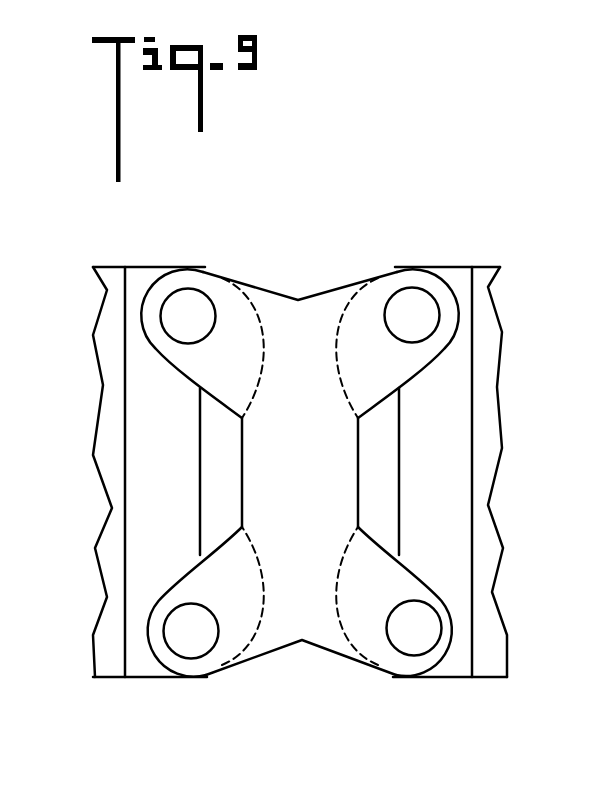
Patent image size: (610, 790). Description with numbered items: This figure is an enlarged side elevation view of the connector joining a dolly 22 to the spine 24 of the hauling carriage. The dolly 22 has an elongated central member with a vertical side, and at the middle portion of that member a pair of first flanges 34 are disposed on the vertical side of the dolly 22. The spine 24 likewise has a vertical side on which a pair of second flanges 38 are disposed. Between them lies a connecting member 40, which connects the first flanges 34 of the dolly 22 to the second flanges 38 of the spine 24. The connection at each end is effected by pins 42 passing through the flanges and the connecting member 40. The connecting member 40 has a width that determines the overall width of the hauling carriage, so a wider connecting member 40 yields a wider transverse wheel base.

The dolly 22 is at (113, 532).
The spine 24 is at (485, 544).
The first flanges 34 is at (153, 401).
The second flanges 38 is at (453, 395).
The connecting member 40 is at (302, 347).
The pins 42 is at (415, 313).